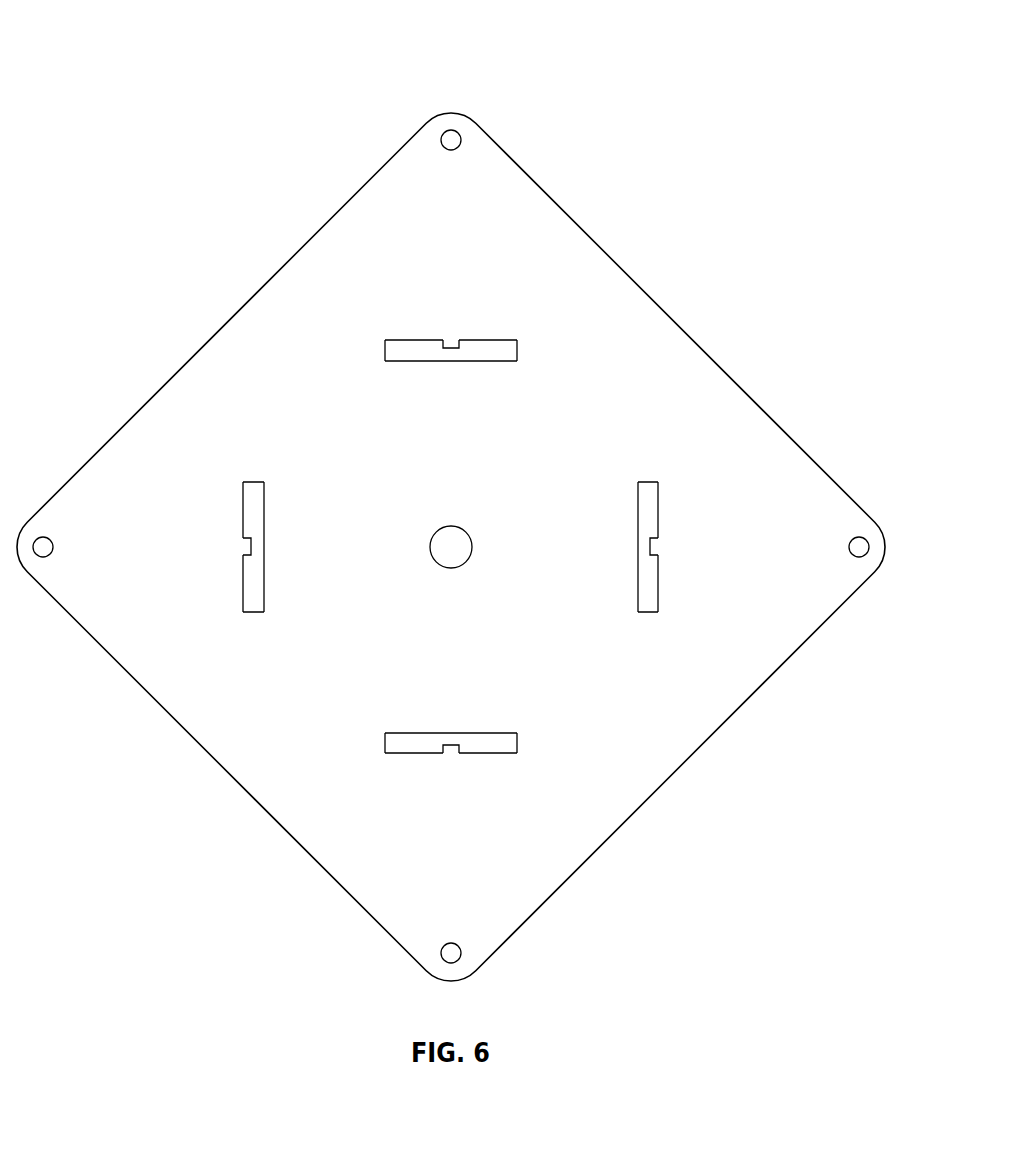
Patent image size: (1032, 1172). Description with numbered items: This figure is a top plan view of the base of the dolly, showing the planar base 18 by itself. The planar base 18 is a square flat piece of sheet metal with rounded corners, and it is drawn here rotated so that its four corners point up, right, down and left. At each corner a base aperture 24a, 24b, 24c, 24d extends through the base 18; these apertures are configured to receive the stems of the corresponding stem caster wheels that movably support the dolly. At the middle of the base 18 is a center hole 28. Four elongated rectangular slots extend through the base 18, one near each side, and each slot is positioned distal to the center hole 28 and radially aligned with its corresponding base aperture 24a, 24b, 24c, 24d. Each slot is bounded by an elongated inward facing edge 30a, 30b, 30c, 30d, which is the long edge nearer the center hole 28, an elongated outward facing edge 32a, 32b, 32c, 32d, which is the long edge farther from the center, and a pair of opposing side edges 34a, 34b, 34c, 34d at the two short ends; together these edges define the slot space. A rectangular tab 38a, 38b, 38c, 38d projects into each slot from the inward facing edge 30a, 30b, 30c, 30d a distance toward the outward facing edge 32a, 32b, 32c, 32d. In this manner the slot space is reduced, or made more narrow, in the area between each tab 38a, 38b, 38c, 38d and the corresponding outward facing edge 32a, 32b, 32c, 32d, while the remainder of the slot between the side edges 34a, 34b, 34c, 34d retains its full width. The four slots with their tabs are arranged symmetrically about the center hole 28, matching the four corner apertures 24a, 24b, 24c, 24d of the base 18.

The planar base 18 is at (118, 111).
The base aperture 24a is at (451, 953).
The base aperture 24b is at (859, 547).
The base aperture 24c is at (451, 140).
The base aperture 24d is at (43, 547).
The center hole 28 is at (472, 537).
The inward facing edge 30a is at (493, 753).
The inward facing edge 30b is at (658, 575).
The inward facing edge 30c is at (427, 340).
The inward facing edge 30d is at (243, 583).
The outward facing edge 32a is at (473, 733).
The outward facing edge 32b is at (638, 535).
The outward facing edge 32c is at (422, 361).
The outward facing edge 32d is at (264, 527).
The side edge 34a is at (385, 744).
The side edge 34b is at (643, 482).
The side edge 34c is at (387, 352).
The side edge 34d is at (253, 482).
The rectangular tab 38a is at (450, 753).
The rectangular tab 38b is at (653, 548).
The rectangular tab 38c is at (452, 342).
The rectangular tab 38d is at (247, 547).